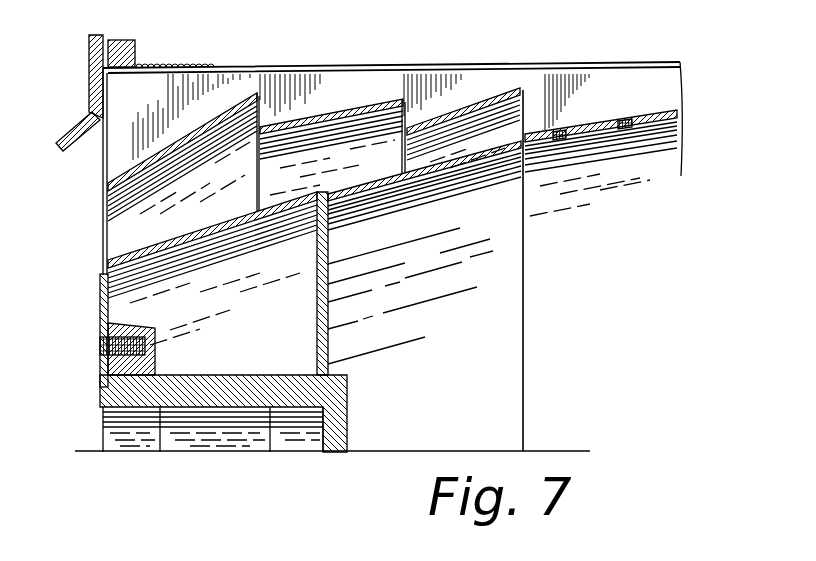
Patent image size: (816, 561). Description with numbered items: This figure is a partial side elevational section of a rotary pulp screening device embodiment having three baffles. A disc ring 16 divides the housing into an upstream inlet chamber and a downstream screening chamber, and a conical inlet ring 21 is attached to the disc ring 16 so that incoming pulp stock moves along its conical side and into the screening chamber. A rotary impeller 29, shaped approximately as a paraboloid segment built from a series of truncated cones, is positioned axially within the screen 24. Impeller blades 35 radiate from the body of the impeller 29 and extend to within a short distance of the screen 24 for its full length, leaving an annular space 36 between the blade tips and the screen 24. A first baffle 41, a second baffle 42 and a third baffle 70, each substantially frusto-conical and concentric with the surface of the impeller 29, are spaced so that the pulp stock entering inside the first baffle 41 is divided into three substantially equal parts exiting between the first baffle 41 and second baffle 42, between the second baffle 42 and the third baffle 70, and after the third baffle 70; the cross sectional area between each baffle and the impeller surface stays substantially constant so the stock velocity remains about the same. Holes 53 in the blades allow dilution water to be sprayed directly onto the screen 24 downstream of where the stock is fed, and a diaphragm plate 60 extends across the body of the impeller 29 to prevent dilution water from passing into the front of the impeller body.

The disc ring 16 is at (90, 60).
The conical inlet ring 21 is at (72, 120).
The screen 24 is at (192, 65).
The rotary impeller 29 is at (143, 252).
The impeller blades 35 is at (312, 100).
The annular space 36 is at (274, 67).
The first baffle 41 is at (182, 137).
The second baffle 42 is at (369, 102).
The holes 53 is at (629, 124).
The diaphragm plate 60 is at (317, 338).
The third baffle 70 is at (483, 107).